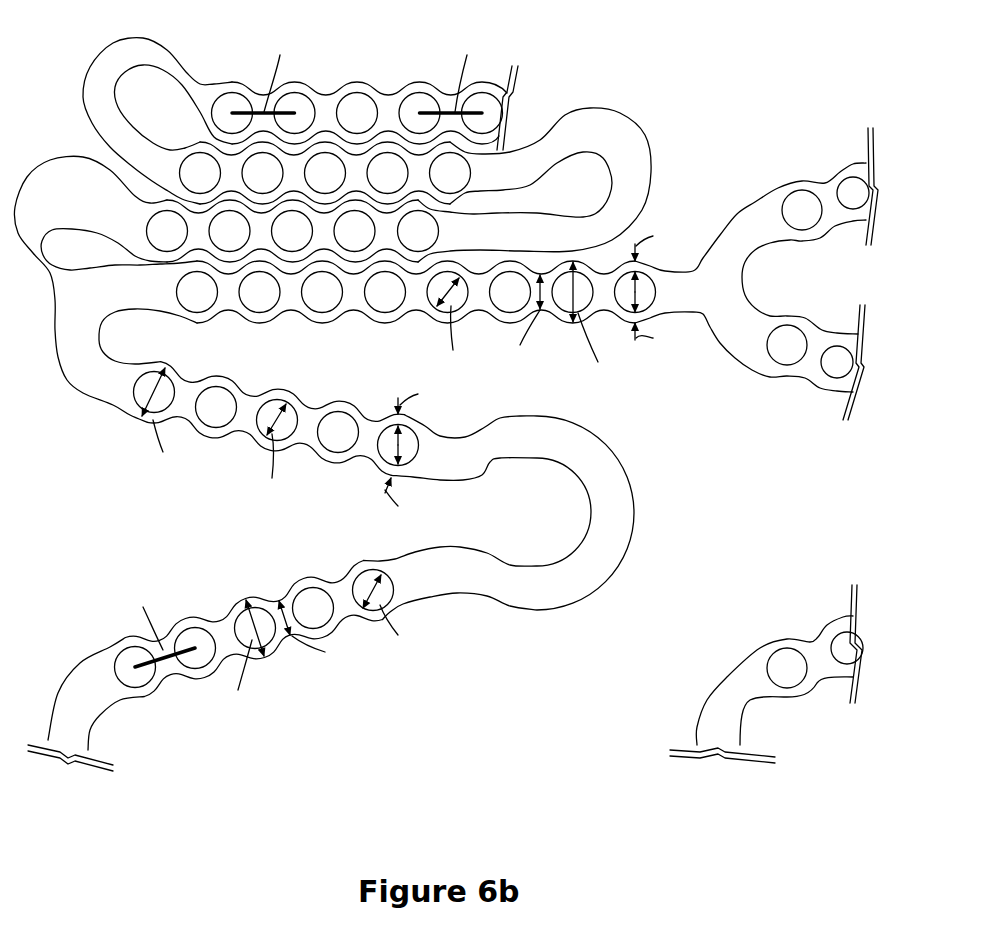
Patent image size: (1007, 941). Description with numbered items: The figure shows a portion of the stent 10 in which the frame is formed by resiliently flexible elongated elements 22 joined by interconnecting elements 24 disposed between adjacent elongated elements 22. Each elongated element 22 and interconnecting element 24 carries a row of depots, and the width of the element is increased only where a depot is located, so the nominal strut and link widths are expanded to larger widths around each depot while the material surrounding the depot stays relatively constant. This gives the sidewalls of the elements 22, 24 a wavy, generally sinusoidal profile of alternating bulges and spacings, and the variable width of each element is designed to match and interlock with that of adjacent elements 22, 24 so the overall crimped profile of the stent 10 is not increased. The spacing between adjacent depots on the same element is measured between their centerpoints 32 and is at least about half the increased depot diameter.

The stent 10 is at (671, 60).
The elongated element 22 is at (105, 68).
The interconnecting element 24 is at (352, 303).
The centerpoint 32 is at (232, 112).